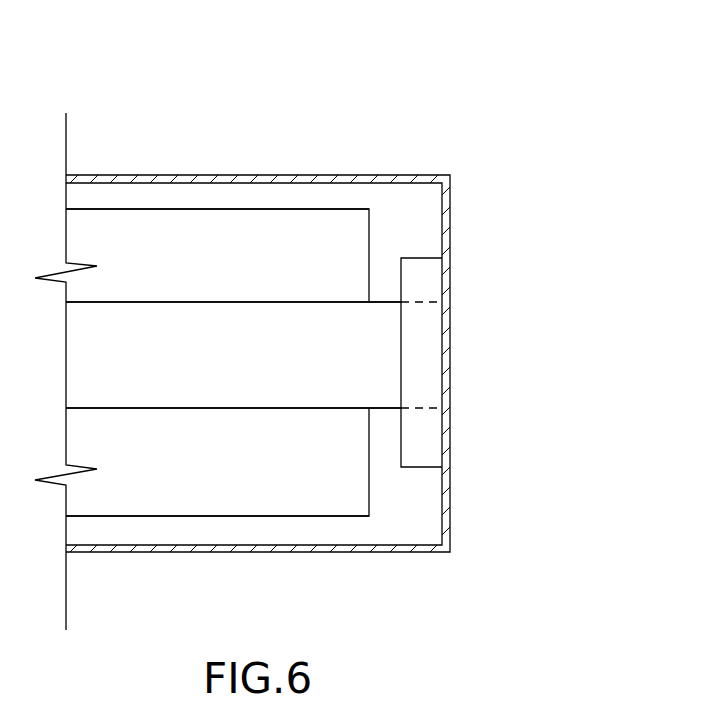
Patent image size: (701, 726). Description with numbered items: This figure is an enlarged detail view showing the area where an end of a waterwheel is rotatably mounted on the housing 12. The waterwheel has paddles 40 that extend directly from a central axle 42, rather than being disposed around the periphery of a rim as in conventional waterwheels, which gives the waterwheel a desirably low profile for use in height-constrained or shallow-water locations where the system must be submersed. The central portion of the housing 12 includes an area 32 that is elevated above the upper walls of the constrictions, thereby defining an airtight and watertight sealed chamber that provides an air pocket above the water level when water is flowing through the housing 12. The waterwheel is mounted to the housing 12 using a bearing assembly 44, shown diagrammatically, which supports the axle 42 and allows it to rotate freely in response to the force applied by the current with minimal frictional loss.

The housing 12 is at (368, 574).
The elevated area of the central portion of the housing 32 is at (377, 175).
The paddles 40 is at (145, 243).
The central axle 42 is at (271, 363).
The bearing assemblies 44 is at (418, 277).